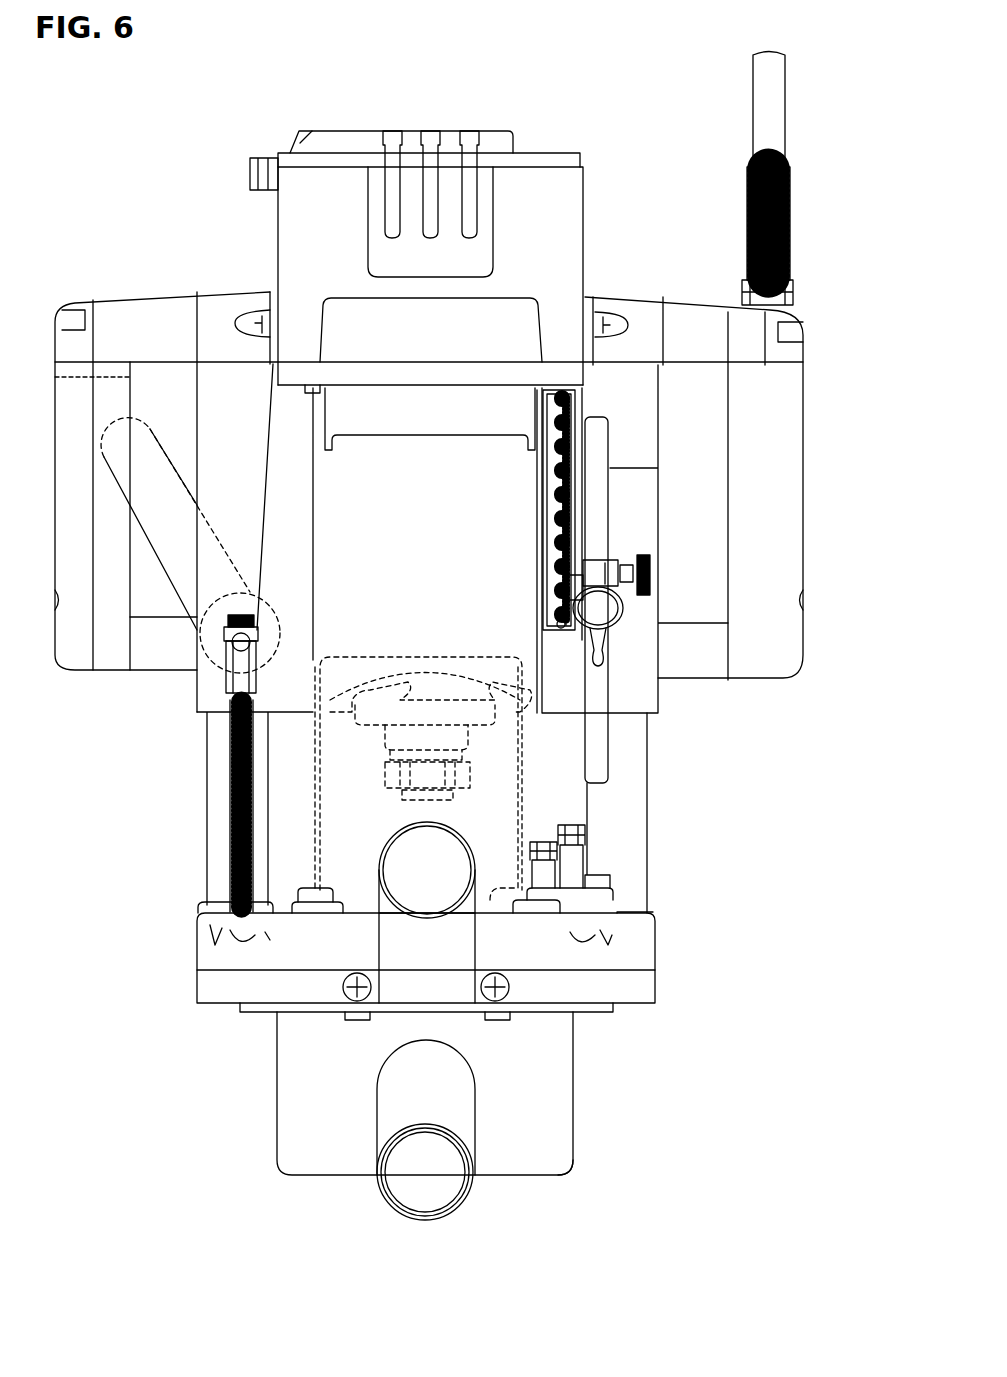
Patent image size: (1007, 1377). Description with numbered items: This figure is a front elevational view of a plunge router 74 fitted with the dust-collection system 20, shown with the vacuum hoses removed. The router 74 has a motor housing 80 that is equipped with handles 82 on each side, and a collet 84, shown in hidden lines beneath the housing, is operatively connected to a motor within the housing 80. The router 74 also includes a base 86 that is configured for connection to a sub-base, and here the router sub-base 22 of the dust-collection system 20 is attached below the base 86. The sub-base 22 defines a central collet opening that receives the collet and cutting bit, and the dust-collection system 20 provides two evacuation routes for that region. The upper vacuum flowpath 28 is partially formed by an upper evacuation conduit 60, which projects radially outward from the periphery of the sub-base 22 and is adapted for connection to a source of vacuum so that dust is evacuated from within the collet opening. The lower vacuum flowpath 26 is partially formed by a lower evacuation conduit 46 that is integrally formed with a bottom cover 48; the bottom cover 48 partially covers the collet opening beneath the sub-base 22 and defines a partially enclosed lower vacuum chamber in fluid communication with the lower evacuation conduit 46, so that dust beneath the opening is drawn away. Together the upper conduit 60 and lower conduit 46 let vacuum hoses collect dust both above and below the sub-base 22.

The router dust-collection system 20 is at (612, 1062).
The router sub-base 22 is at (657, 990).
The lower vacuum flowpath 26 is at (388, 1203).
The upper vacuum flowpath 28 is at (390, 898).
The lower evacuation conduit 46 is at (460, 1200).
The bottom cover 48 is at (573, 1172).
The upper evacuation conduit 60 is at (478, 940).
The router 74 is at (205, 235).
The motor housing 80 is at (655, 700).
The handles 82 is at (55, 398).
The collet 84 is at (393, 785).
The base 86 is at (655, 945).